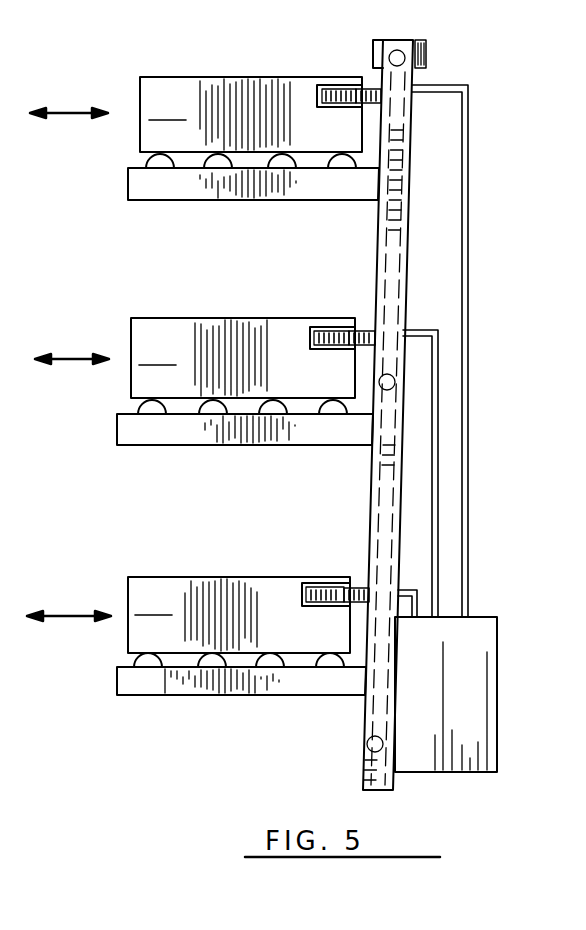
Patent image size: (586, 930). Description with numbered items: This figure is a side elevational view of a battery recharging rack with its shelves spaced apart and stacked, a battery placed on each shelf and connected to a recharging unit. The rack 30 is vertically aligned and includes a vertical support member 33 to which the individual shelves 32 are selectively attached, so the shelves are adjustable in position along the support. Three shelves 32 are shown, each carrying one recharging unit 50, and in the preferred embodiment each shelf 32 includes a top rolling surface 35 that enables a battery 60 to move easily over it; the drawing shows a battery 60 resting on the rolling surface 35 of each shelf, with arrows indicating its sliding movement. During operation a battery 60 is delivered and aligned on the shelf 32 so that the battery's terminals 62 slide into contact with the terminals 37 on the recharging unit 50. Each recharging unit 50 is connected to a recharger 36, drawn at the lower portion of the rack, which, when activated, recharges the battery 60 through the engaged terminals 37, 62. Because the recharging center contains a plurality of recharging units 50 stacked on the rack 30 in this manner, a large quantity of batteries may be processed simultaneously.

The rack 30 is at (416, 84).
The shelf 32 is at (128, 180).
The vertical support member 33 is at (405, 258).
The top rolling surface 35 is at (158, 162).
The recharger 36 is at (497, 676).
The terminals 37 is at (345, 94).
The recharging unit 50 is at (470, 90).
The battery 60 is at (245, 365).
The battery terminals 62 is at (320, 88).